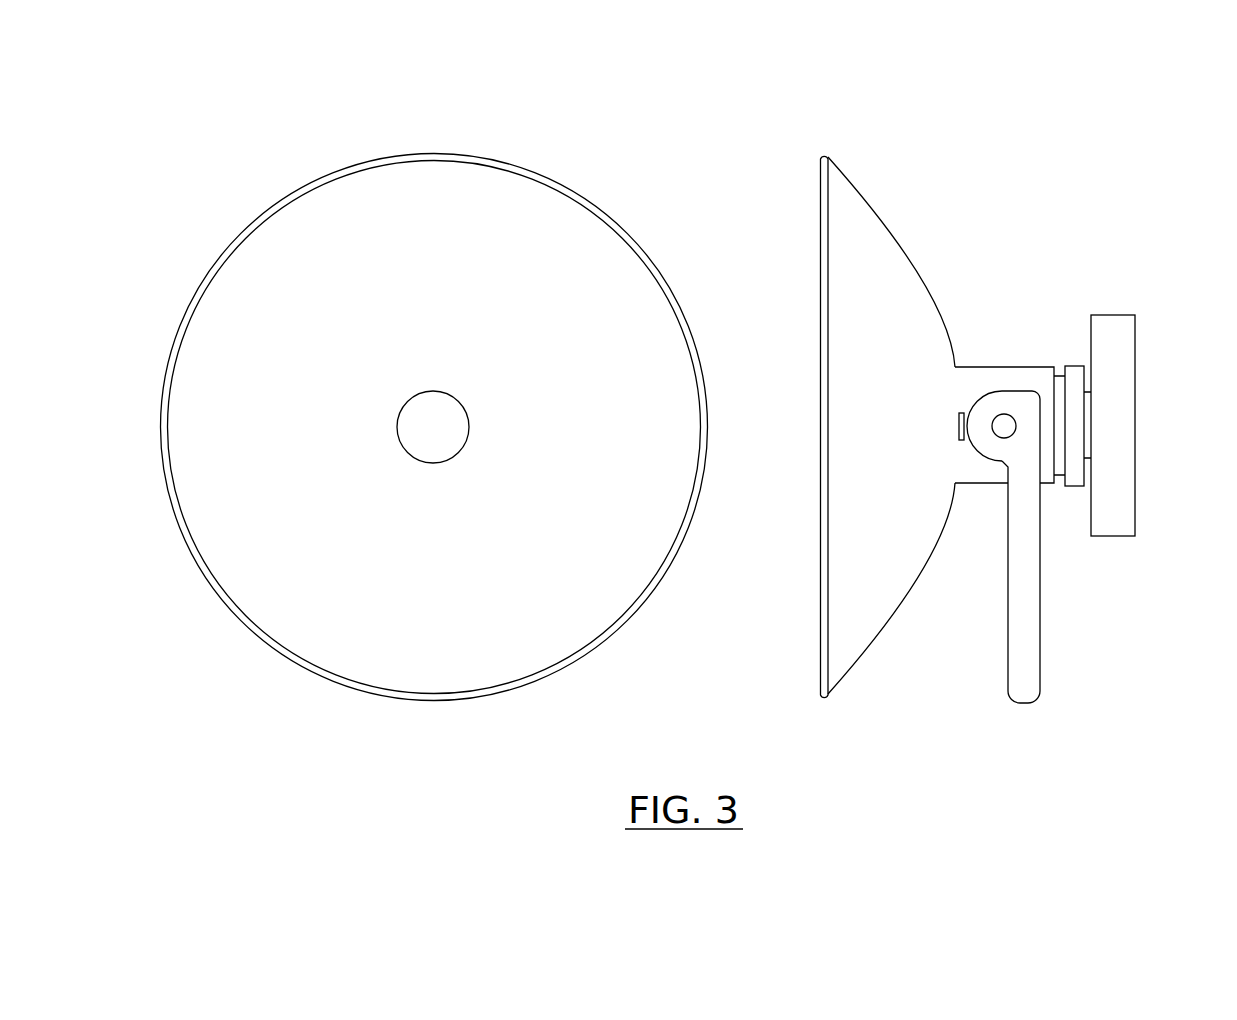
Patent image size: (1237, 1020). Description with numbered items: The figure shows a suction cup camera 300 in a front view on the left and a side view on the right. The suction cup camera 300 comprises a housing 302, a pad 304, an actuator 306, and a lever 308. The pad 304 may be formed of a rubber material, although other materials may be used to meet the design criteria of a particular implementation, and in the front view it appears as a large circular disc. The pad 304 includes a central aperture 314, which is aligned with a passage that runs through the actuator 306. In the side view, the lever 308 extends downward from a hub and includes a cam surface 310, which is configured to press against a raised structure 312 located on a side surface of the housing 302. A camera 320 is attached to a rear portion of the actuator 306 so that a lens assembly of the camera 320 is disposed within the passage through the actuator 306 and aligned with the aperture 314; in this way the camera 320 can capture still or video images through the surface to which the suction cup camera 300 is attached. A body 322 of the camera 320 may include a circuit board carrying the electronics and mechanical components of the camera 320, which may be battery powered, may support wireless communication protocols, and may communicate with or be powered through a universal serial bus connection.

The suction cup camera 300 is at (325, 76).
The housing 302 is at (326, 176).
The pad 304 is at (451, 265).
The actuator 306 is at (1075, 367).
The lever 308 is at (1040, 656).
The cam surface 310 is at (966, 405).
The raised structure 312 is at (959, 437).
The aperture 314 is at (420, 396).
The camera 320 is at (1117, 315).
The body 322 is at (1104, 444).